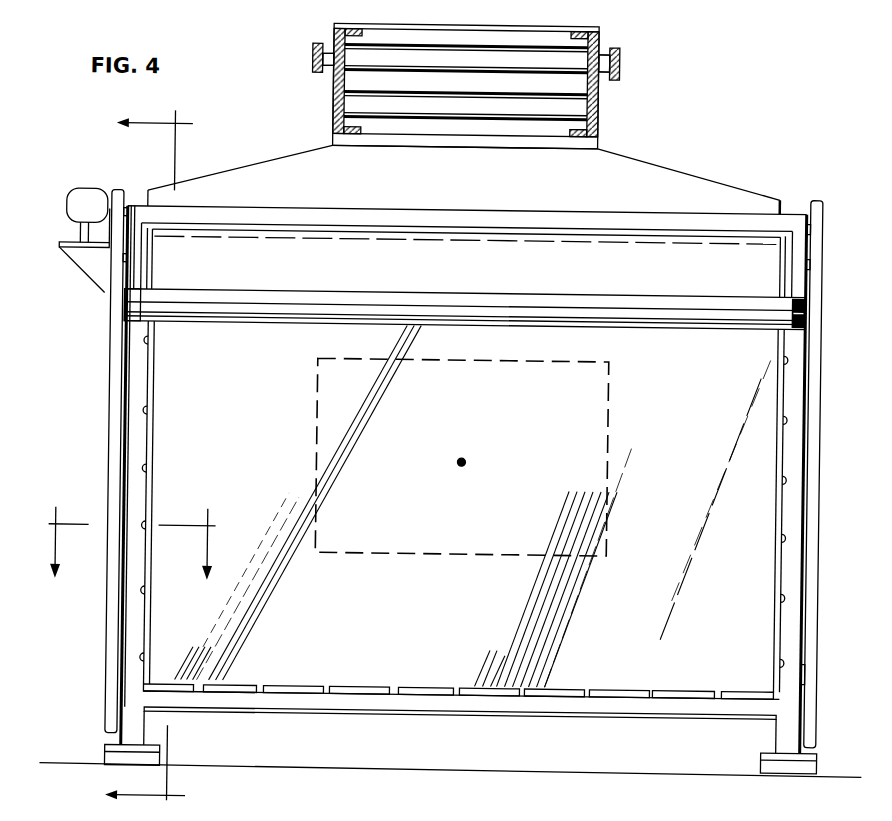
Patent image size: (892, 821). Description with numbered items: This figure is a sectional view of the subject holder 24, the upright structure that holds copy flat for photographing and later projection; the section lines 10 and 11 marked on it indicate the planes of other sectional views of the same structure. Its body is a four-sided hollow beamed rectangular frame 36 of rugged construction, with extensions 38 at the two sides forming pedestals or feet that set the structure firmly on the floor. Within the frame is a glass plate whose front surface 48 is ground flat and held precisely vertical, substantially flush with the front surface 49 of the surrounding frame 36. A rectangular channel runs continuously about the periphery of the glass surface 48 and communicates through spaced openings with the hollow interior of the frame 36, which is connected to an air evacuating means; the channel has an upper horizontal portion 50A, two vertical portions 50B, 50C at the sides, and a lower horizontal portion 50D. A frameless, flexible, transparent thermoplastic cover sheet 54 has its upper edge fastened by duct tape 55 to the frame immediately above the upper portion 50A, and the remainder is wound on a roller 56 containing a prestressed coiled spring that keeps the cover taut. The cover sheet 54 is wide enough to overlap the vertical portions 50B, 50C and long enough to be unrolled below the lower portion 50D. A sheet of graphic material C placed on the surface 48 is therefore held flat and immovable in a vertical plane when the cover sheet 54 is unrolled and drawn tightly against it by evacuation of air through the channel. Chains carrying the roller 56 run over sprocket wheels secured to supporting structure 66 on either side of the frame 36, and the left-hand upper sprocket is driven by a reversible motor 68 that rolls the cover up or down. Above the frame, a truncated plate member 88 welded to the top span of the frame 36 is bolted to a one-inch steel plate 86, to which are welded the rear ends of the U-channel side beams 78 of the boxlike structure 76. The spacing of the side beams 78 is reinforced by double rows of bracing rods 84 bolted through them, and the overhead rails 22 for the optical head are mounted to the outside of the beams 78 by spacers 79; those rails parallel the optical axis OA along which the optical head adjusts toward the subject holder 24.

The section line 10- 10 is at (134, 458).
The section line 11- 11 is at (131, 558).
The overhead rails 22 is at (308, 48).
The subject holder 24 is at (415, 478).
The frame 36 is at (124, 629).
The extensions 38 is at (150, 719).
The front surface of glass plate 48 is at (476, 600).
The front surface of frame 49 is at (132, 375).
The upper horizontal portion of channel 50A is at (575, 246).
The vertical portion of channel 50B is at (154, 440).
The vertical portion of channel 50C is at (778, 556).
The lower horizontal portion of channel 50D is at (410, 688).
The cover sheet 54 is at (425, 292).
The duct tape 55 is at (748, 228).
The roller 56 is at (126, 302).
The supporting structure 66 is at (110, 700).
The reversible motor 68 is at (72, 193).
The boxlike structure 76 is at (453, 100).
The U-channel side beams 78 is at (594, 112).
The spacers 79 is at (318, 70).
The bracing rods 84 is at (408, 62).
The steel plate 86 is at (504, 148).
The truncated plate member 88 is at (685, 176).
The sheet of graphic material C is at (452, 405).
The optical axis OA is at (460, 460).